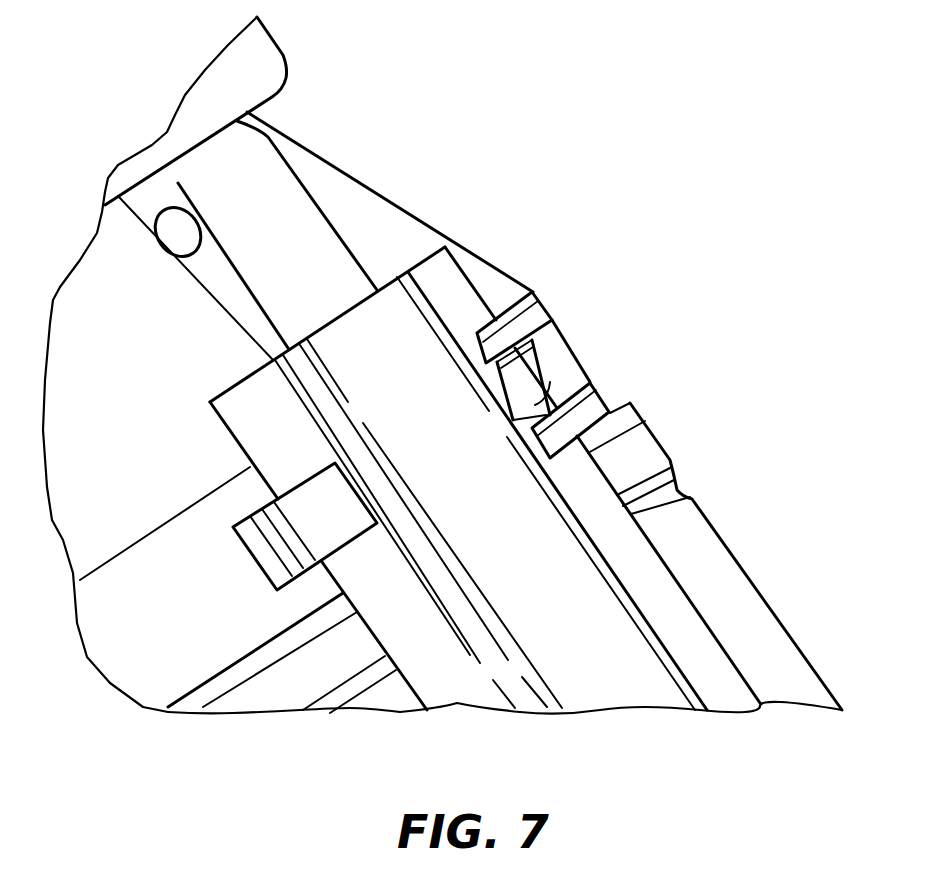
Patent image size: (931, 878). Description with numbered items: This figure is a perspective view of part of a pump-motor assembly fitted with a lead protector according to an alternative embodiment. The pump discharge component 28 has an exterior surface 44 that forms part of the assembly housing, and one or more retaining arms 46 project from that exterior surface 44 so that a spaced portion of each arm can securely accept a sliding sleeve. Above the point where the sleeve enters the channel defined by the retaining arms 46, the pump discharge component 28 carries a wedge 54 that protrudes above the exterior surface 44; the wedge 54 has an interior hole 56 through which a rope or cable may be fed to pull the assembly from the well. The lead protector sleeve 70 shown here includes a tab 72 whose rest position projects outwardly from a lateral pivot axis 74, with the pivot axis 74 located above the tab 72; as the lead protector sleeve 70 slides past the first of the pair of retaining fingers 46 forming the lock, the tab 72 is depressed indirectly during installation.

The pump discharge component 28 is at (407, 213).
The exterior surface 44 is at (192, 620).
The retaining arm 46 is at (323, 503).
The wedge 54 is at (210, 283).
The interior hole 56 is at (181, 226).
The lead protector sleeve 70 is at (253, 415).
The tab 72 is at (530, 370).
The lateral pivot axis 74 is at (548, 392).